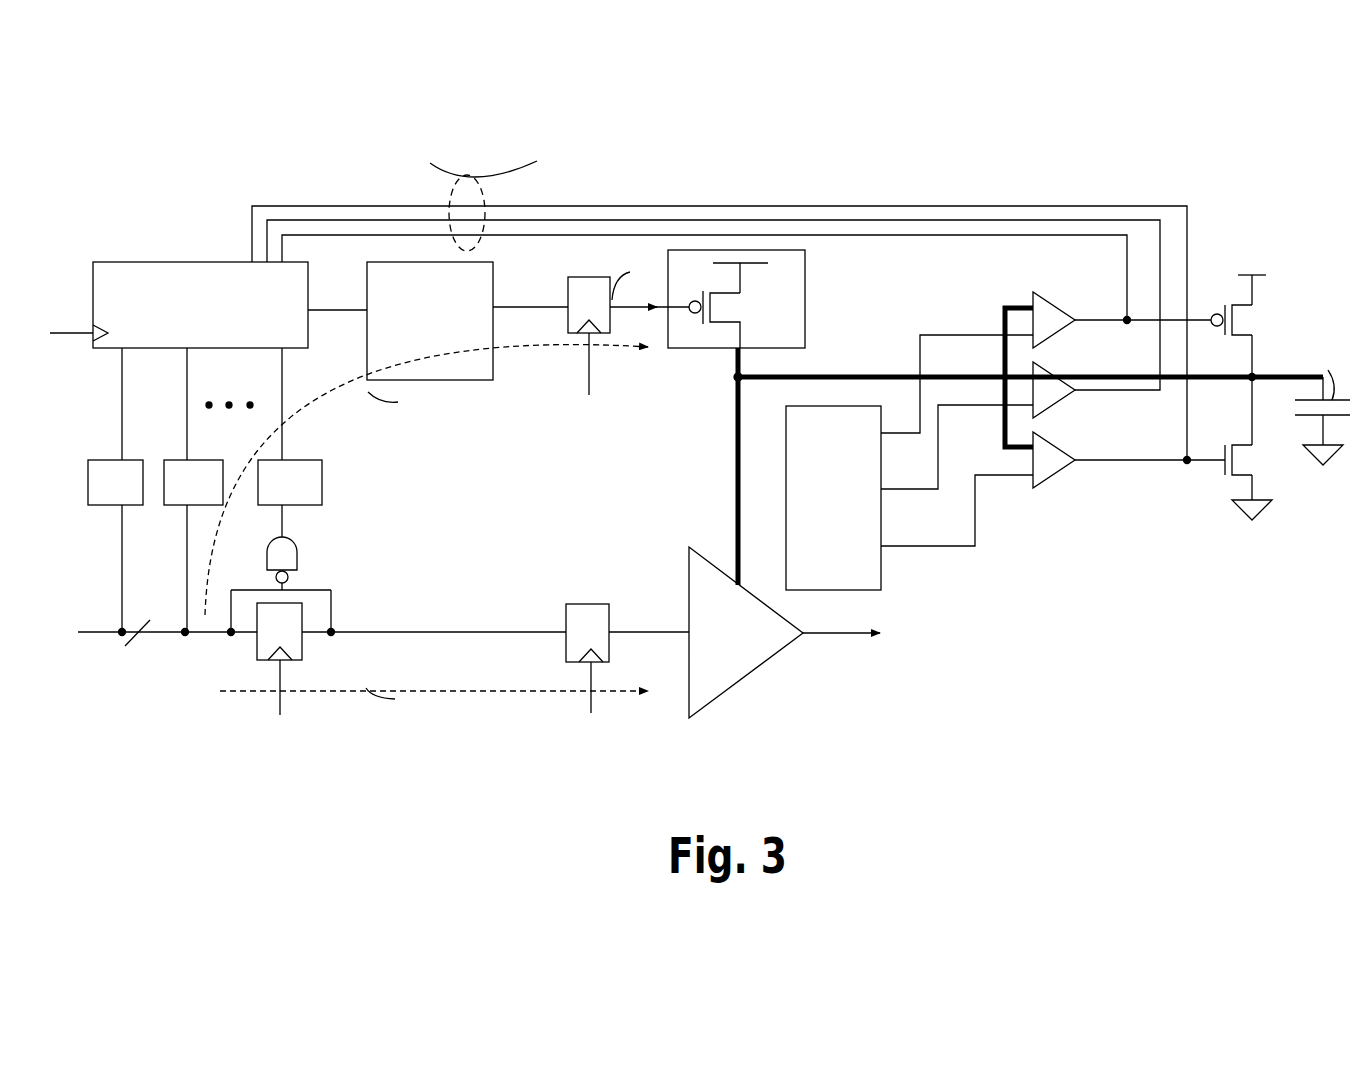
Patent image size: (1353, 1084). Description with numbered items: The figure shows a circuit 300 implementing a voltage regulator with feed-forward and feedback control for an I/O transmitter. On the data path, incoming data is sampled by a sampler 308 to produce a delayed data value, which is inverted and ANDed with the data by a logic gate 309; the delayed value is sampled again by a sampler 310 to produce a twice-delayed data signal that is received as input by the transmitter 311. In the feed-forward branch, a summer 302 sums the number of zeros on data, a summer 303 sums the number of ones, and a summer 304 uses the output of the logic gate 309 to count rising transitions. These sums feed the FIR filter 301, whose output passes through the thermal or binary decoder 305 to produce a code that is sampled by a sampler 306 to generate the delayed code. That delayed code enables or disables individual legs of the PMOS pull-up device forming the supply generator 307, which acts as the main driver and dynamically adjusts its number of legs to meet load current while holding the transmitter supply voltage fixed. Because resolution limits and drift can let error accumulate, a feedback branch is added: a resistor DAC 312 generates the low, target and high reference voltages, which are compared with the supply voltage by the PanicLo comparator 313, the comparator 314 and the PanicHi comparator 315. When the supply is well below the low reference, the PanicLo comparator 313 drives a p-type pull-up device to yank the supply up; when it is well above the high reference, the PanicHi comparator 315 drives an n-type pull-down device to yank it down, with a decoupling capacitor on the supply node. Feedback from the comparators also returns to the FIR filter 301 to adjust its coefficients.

The circuit 300 is at (650, 156).
The FIR filter 301 is at (200, 305).
The summer 302 is at (115, 482).
The summer 303 is at (193, 482).
The summer 304 is at (290, 482).
The thermal or binary decoder 305 is at (430, 321).
The sampler 306 is at (589, 336).
The supply generator 307 is at (736, 299).
The sampler 308 is at (279, 659).
The logic gate 309 is at (298, 560).
The sampler 310 is at (587, 658).
The transmitter 311 is at (742, 680).
The resistor DAC 312 is at (833, 498).
The PanicLo comparator 313 is at (1064, 316).
The comparator 314 is at (1055, 380).
The PanicHi comparator 315 is at (1055, 468).